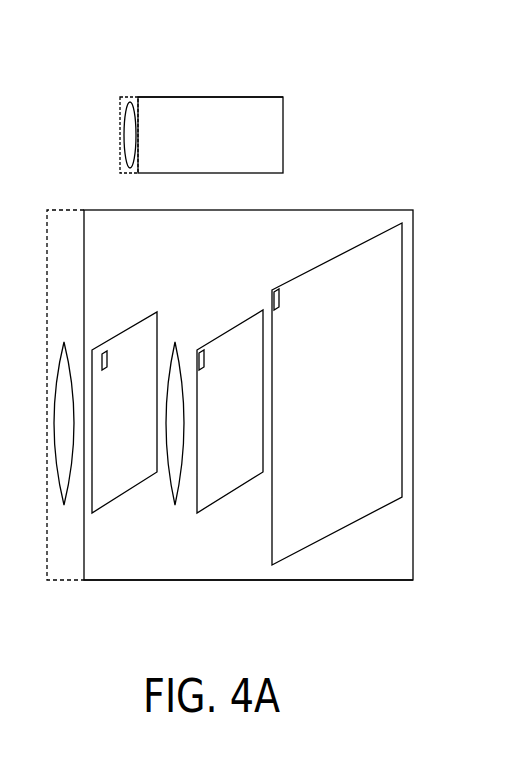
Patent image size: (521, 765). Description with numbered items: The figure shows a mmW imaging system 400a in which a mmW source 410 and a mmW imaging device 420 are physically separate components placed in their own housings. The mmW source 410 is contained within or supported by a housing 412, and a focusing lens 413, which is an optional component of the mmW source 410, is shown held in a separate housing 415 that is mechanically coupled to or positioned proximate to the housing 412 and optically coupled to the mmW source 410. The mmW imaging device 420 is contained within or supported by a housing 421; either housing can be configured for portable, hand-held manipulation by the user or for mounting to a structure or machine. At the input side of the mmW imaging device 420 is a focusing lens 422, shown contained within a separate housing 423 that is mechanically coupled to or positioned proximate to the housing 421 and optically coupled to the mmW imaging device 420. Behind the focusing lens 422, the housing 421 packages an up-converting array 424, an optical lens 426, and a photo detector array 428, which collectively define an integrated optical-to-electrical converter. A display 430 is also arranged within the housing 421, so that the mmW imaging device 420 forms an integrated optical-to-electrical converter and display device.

The mmW imaging system 400a is at (440, 127).
The mmW source 410 is at (285, 132).
The housing 412 is at (212, 97).
The focusing lens 413 is at (124, 140).
The separate housing 415 is at (130, 95).
The mmW imaging device 420 is at (380, 210).
The housing 421 is at (205, 582).
The focusing lens 422 is at (64, 345).
The separate housing 423 is at (63, 582).
The up-converting array 424 is at (132, 490).
The optical lens 426 is at (176, 345).
The photo detector array 428 is at (217, 503).
The display 430 is at (382, 505).